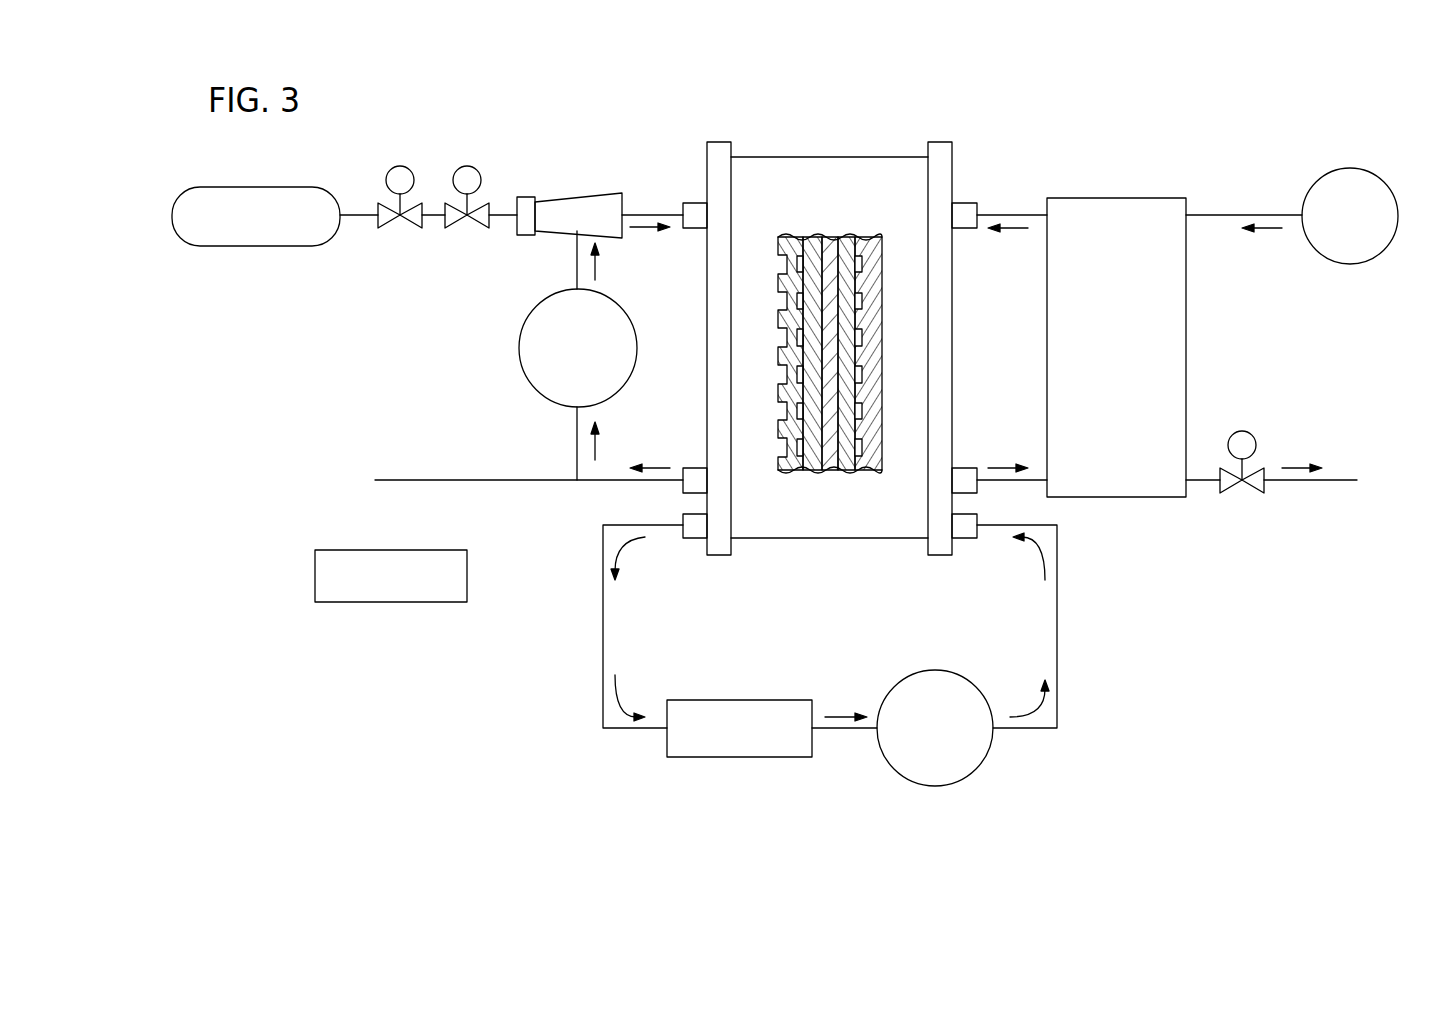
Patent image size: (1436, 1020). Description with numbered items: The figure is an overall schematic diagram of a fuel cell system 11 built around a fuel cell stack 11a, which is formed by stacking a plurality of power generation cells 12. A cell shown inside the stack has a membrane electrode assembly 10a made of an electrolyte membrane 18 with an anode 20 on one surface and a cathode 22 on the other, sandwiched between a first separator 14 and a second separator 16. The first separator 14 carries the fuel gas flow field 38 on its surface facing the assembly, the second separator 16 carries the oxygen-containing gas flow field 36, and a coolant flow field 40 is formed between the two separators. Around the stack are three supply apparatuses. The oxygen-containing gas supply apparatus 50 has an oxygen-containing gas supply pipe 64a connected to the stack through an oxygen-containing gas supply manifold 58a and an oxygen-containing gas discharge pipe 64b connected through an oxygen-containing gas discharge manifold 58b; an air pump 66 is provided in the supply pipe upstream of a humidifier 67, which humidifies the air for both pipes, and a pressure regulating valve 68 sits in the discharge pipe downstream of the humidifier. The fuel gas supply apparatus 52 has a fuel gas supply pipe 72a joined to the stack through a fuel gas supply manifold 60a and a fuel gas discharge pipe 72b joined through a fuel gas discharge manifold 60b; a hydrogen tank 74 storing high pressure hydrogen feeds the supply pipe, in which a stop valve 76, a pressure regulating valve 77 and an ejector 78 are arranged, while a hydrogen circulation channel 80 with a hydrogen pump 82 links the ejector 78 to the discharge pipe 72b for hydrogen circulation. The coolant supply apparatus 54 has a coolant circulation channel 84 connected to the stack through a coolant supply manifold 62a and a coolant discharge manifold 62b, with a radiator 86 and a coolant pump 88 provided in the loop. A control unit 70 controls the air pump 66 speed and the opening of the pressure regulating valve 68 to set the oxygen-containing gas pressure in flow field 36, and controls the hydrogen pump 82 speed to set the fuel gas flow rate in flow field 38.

The fuel cell system 11 is at (573, 112).
The fuel cell stack 11a is at (800, 147).
The power generation cell 12 is at (858, 169).
The membrane electrode assembly 10a is at (829, 317).
The first separator 14 is at (765, 284).
The second separator 16 is at (892, 283).
The electrolyte membrane 18 is at (827, 236).
The anode 20 is at (809, 235).
The cathode 22 is at (859, 332).
The oxygen-containing gas flow field 36 is at (862, 373).
The fuel gas flow field 38 is at (797, 299).
The coolant flow field 40 is at (784, 441).
The oxygen-containing gas supply apparatus 50 is at (1302, 151).
The fuel gas supply apparatus 52 is at (348, 167).
The coolant supply apparatus 54 is at (774, 655).
The oxygen-containing gas supply manifold 58a is at (966, 205).
The oxygen-containing gas discharge manifold 58b is at (964, 468).
The fuel gas supply manifold 60a is at (690, 203).
The fuel gas discharge manifold 60b is at (690, 468).
The coolant supply manifold 62a is at (965, 540).
The coolant discharge manifold 62b is at (700, 540).
The oxygen-containing gas supply pipe 64a is at (1247, 212).
The oxygen-containing gas discharge pipe 64b is at (1202, 485).
The air pump 66 is at (1362, 173).
The humidifier 67 is at (1128, 198).
The pressure regulating valve 68 is at (1239, 431).
The control unit 70 is at (418, 550).
The fuel gas supply pipe 72a is at (500, 212).
The fuel gas discharge pipe 72b is at (511, 484).
The hydrogen tank 74 is at (237, 187).
The stop valve 76 is at (395, 167).
The pressure regulating valve 77 is at (462, 167).
The ejector 78 is at (590, 199).
The hydrogen circulation channel 80 is at (576, 263).
The hydrogen pump 82 is at (532, 381).
The coolant circulation channel 84 is at (601, 632).
The radiator 86 is at (770, 700).
The coolant pump 88 is at (946, 672).